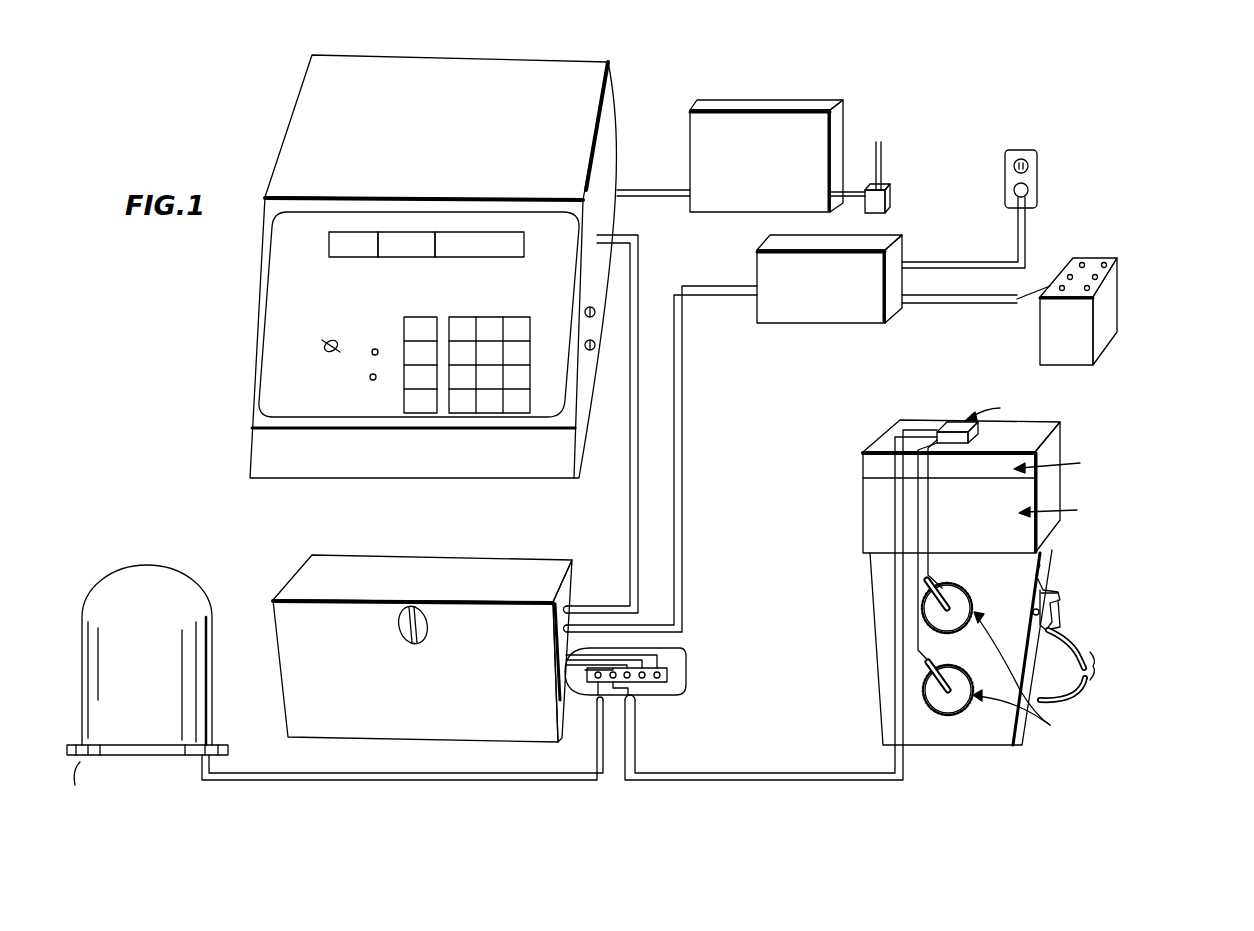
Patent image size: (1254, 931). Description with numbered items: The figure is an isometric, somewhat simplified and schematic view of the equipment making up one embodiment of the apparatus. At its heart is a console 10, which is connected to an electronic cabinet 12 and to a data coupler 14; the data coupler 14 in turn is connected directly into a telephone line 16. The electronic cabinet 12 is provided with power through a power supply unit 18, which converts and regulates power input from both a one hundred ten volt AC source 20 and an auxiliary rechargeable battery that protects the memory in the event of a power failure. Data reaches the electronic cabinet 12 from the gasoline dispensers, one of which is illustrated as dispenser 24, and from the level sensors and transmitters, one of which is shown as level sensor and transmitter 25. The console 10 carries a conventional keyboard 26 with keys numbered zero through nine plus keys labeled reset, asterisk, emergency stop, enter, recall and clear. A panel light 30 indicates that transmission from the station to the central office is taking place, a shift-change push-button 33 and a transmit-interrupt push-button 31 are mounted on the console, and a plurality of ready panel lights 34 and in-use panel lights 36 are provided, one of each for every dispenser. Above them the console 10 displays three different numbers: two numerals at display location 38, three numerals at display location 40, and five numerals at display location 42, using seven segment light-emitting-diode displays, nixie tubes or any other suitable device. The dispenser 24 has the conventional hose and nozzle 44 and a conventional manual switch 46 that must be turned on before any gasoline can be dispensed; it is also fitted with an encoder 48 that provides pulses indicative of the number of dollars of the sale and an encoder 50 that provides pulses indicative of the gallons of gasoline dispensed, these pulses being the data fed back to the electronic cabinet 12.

The console 10 is at (264, 243).
The electronic cabinet 12 is at (1118, 307).
The data coupler 14 is at (821, 106).
The telephone line 16 is at (880, 144).
The power supply unit 18 is at (818, 323).
The 110 volt AC source 20 is at (1036, 183).
The dispenser 24 is at (870, 578).
The level sensor and transmitter 25 is at (173, 572).
The keyboard 26 is at (543, 378).
The panel light 30 is at (370, 377).
The transmit-interrupt push-button 31 is at (596, 345).
The shift-change push-button 33 is at (596, 312).
The ready panel lights 34 is at (523, 270).
The in-use panel lights 36 is at (527, 290).
The display location 38 is at (342, 232).
The display location 40 is at (405, 232).
The display location 42 is at (477, 232).
The hose and nozzle 44 is at (1060, 596).
The manual switch 46 is at (1040, 612).
The encoder 48 is at (965, 597).
The encoder 50 is at (957, 675).